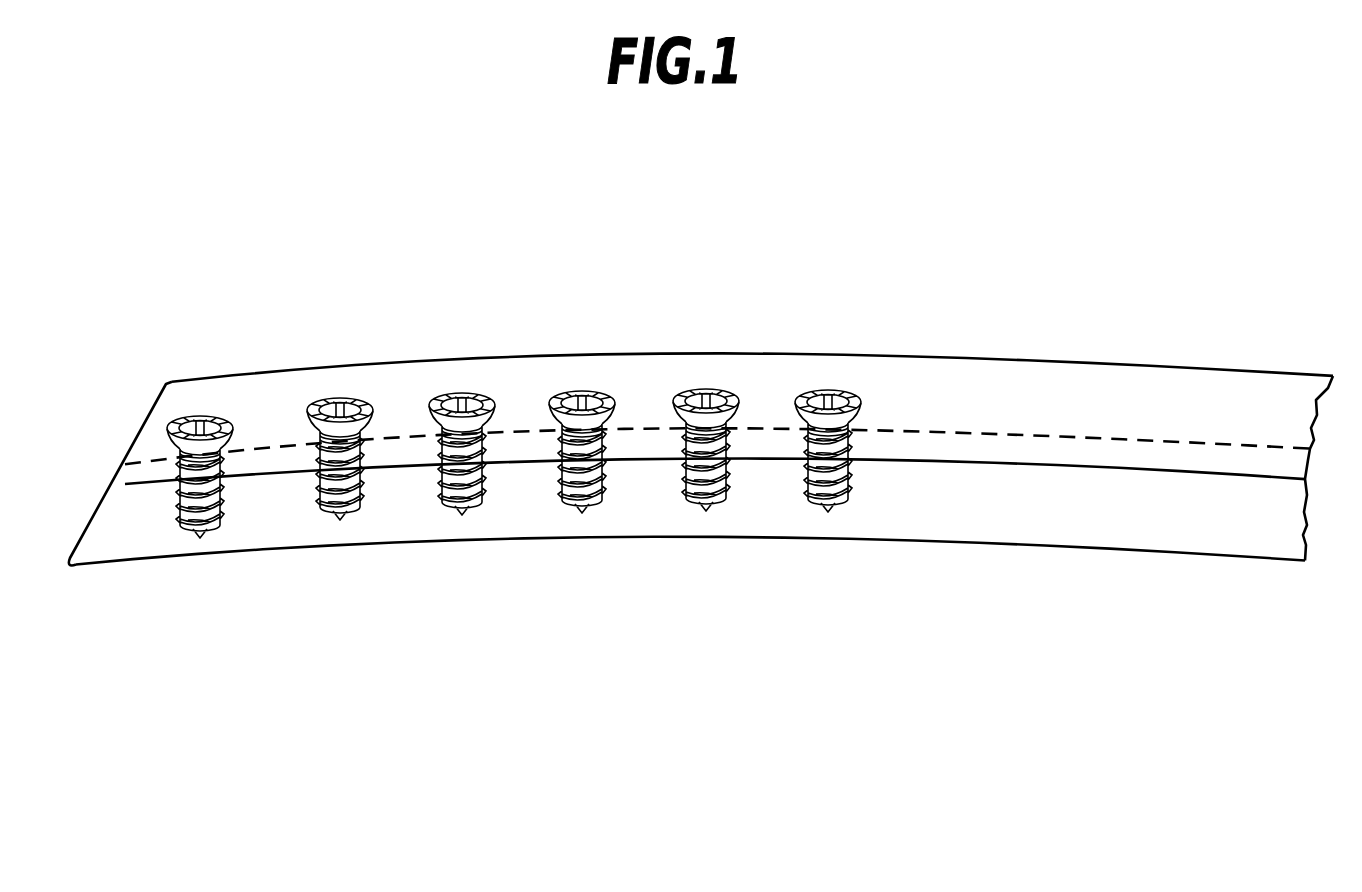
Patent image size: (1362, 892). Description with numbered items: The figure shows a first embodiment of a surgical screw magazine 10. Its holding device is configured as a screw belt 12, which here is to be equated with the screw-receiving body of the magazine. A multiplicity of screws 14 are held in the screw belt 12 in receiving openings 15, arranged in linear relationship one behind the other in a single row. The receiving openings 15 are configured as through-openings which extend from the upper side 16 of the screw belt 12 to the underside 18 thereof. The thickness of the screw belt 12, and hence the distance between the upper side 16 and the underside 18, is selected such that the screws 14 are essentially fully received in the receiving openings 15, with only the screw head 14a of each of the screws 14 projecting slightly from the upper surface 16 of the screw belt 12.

The surgical screw magazine 10 is at (932, 295).
The screw belt 12 is at (190, 358).
The screws 14 is at (452, 375).
The screw head 14a is at (310, 403).
The receiving openings 15 is at (328, 515).
The upper side 16 is at (1017, 394).
The underside 18 is at (1005, 565).